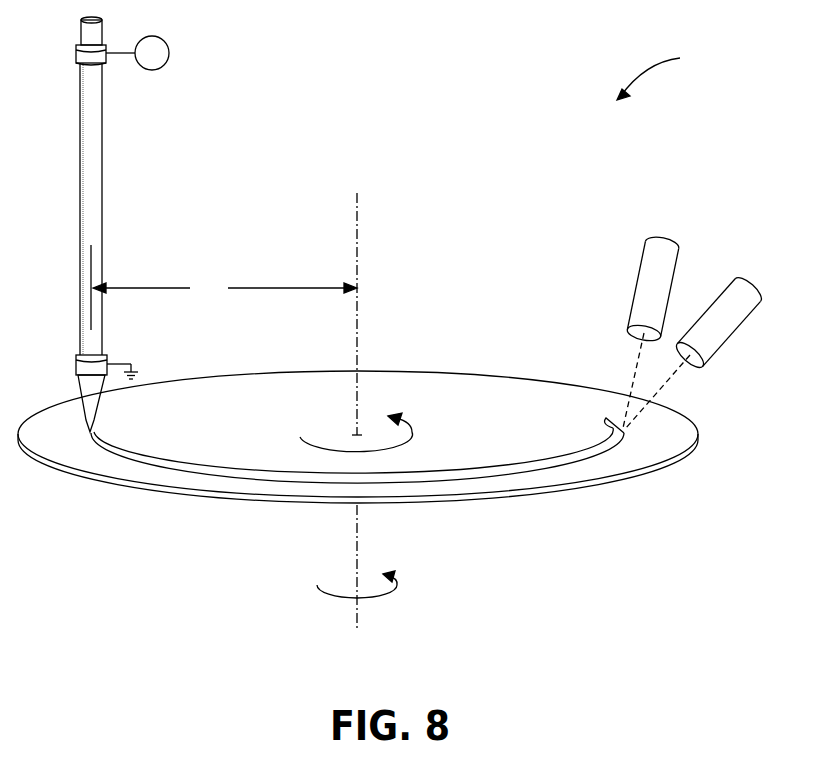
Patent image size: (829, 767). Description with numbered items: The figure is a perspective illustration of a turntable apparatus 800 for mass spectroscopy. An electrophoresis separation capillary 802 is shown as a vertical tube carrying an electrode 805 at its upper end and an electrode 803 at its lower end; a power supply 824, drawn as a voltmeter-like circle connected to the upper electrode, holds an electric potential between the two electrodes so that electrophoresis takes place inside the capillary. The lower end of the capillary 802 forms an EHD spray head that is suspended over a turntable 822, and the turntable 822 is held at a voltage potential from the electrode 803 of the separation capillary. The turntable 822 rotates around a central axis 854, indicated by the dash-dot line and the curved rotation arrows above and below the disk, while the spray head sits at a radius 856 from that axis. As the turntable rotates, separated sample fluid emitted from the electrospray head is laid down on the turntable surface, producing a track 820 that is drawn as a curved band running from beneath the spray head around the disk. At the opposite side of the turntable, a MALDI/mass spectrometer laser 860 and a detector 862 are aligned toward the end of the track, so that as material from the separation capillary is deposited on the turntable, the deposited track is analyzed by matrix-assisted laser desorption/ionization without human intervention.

The measurement system 800 is at (669, 74).
The electrophoresis separation capillary 802 is at (80, 140).
The electrode 803 is at (76, 365).
The electrode 805 is at (76, 50).
The track 820 is at (203, 462).
The turntable 822 is at (643, 477).
The power supply 824 is at (170, 50).
The axis 854 is at (360, 542).
The radius R 856 is at (158, 282).
The MALDI/mass spectrometer laser 860 is at (637, 272).
The detector 862 is at (742, 330).